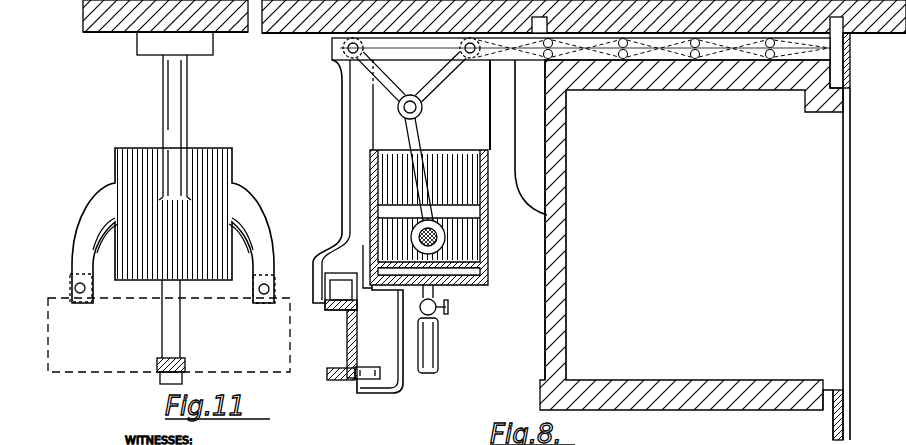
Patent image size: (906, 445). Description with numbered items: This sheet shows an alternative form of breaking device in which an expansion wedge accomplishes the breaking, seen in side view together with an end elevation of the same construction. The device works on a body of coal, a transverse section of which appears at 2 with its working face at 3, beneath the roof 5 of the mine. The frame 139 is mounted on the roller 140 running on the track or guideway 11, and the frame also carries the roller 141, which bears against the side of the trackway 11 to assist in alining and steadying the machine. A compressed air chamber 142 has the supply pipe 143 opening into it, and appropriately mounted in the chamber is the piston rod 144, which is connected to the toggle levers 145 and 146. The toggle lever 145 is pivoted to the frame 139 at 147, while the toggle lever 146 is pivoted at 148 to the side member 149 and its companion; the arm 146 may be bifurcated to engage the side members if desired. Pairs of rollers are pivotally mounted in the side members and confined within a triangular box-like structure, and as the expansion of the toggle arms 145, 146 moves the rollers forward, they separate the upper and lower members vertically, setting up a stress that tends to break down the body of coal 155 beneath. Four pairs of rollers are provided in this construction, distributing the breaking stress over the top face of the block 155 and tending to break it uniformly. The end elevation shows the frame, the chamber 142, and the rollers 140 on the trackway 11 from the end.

In FIG. 11, the frame 139 is at (177, 132).
In FIG. 8, the frame 139 is at (350, 145).
In FIG. 11, the compressed air chamber 142 is at (117, 178).
In FIG. 8, the compressed air chamber 142 is at (458, 286).
In FIG. 11, the roller 140 is at (64, 318).
In FIG. 8, the roller 140 is at (340, 293).
In FIG. 11, the track or guideway 11 is at (240, 353).
In FIG. 8, the track or guideway 11 is at (350, 343).
In FIG. 11, the pivot 147 is at (157, 368).
In FIG. 8, the pivot 147 is at (338, 60).
In FIG. 8, the roof 5 is at (297, 8).
In FIG. 8, the toggle lever 145 is at (376, 86).
In FIG. 8, the toggle lever 146 is at (428, 92).
In FIG. 8, the pivot 148 is at (470, 58).
In FIG. 8, the side member 149 is at (608, 60).
In FIG. 8, the body of coal 155 is at (725, 183).
In FIG. 8, the transverse section 2 is at (595, 235).
In FIG. 8, the working face 3 is at (548, 268).
In FIG. 8, the piston rod 144 is at (480, 236).
In FIG. 8, the supply pipe 143 is at (438, 345).
In FIG. 8, the roller 141 is at (368, 380).